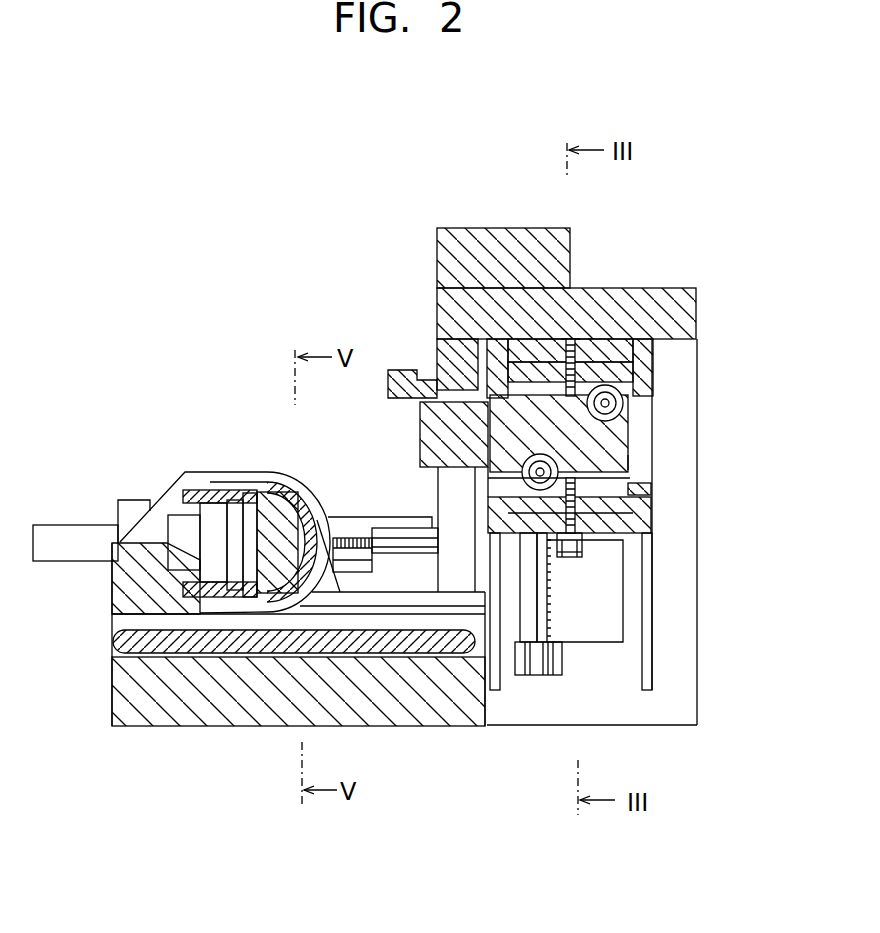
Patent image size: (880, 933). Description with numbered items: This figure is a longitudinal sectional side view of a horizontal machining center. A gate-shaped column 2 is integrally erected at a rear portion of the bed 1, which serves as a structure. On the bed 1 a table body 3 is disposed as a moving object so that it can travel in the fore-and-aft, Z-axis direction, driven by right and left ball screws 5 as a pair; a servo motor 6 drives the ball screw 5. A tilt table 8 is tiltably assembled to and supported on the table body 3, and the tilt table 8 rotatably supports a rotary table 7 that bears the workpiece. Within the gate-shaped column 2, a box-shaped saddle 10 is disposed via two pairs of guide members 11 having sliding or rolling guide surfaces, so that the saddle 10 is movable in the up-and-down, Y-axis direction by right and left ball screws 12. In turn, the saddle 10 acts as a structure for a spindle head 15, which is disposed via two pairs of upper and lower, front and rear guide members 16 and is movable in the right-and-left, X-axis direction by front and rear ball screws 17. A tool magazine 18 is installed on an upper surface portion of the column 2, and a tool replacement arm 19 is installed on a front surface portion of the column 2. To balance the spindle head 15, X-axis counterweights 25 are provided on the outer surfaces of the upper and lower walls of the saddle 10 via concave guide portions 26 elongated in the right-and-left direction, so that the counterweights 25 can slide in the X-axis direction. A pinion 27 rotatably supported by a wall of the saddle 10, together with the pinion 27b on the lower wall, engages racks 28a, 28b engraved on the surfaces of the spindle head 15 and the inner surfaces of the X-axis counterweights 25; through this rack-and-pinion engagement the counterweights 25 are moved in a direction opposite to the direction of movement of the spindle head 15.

The bed 1 is at (226, 690).
The gate-shaped column 2 is at (660, 310).
The table body 3 is at (140, 565).
The ball screw 5 is at (349, 533).
The servo motor 6 is at (70, 527).
The rotary table 7 is at (275, 510).
The tilt table 8 is at (200, 495).
The box-shaped saddle 10 is at (648, 356).
The guide member 11 is at (652, 663).
The ball screw 12 is at (548, 597).
The spindle head 15 is at (605, 428).
The guide member 16 is at (442, 362).
The ball screw 17 is at (606, 395).
The tool magazine 18 is at (480, 243).
The tool replacement arm 19 is at (410, 377).
The X-axis counterweight 25 is at (598, 365).
The concave guide portion 26 is at (520, 345).
The pinion 27 is at (556, 345).
The pinion 27b is at (582, 520).
The rack 28a is at (640, 462).
The rack 28b is at (572, 340).